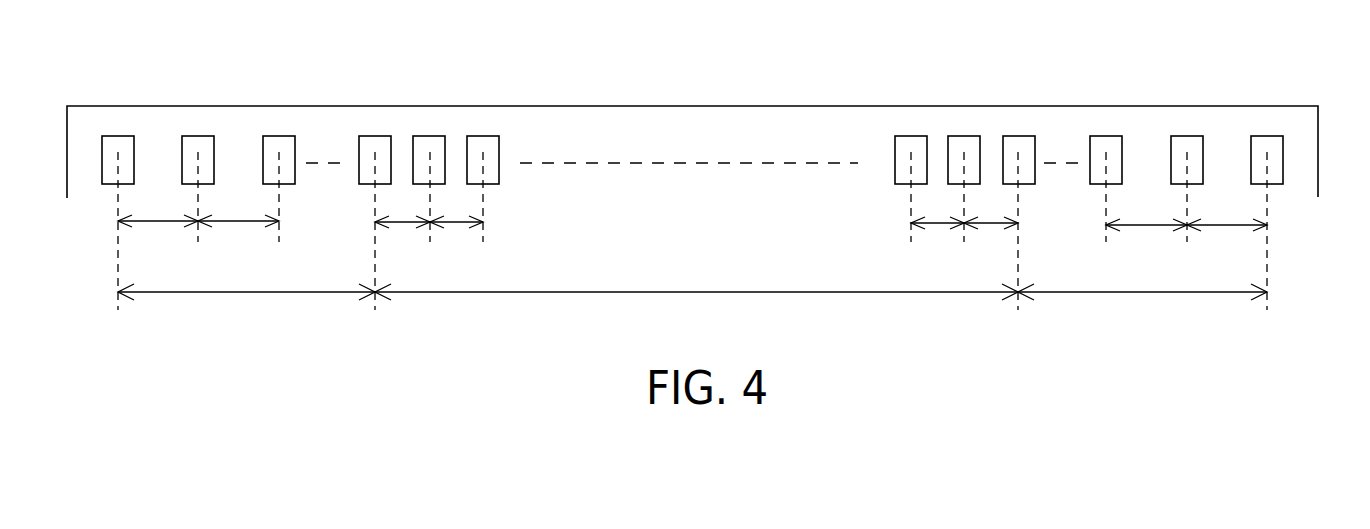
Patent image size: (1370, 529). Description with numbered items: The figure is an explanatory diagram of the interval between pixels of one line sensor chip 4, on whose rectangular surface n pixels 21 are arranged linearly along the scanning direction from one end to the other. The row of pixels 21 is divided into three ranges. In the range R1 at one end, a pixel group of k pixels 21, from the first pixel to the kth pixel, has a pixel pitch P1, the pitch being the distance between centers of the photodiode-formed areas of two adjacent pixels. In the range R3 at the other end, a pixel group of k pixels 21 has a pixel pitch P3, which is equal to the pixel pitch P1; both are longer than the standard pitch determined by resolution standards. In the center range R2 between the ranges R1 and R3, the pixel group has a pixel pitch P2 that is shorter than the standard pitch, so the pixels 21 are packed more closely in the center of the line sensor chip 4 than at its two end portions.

The pixel 21 is at (119, 148).
The line sensor chip 4 is at (1318, 143).
The pixel pitch P1 is at (198, 211).
The pixel pitch P2 is at (696, 212).
The pixel pitch P3 is at (1186, 214).
The range R1 is at (246, 308).
The range R2 is at (696, 310).
The range R3 is at (1142, 307).